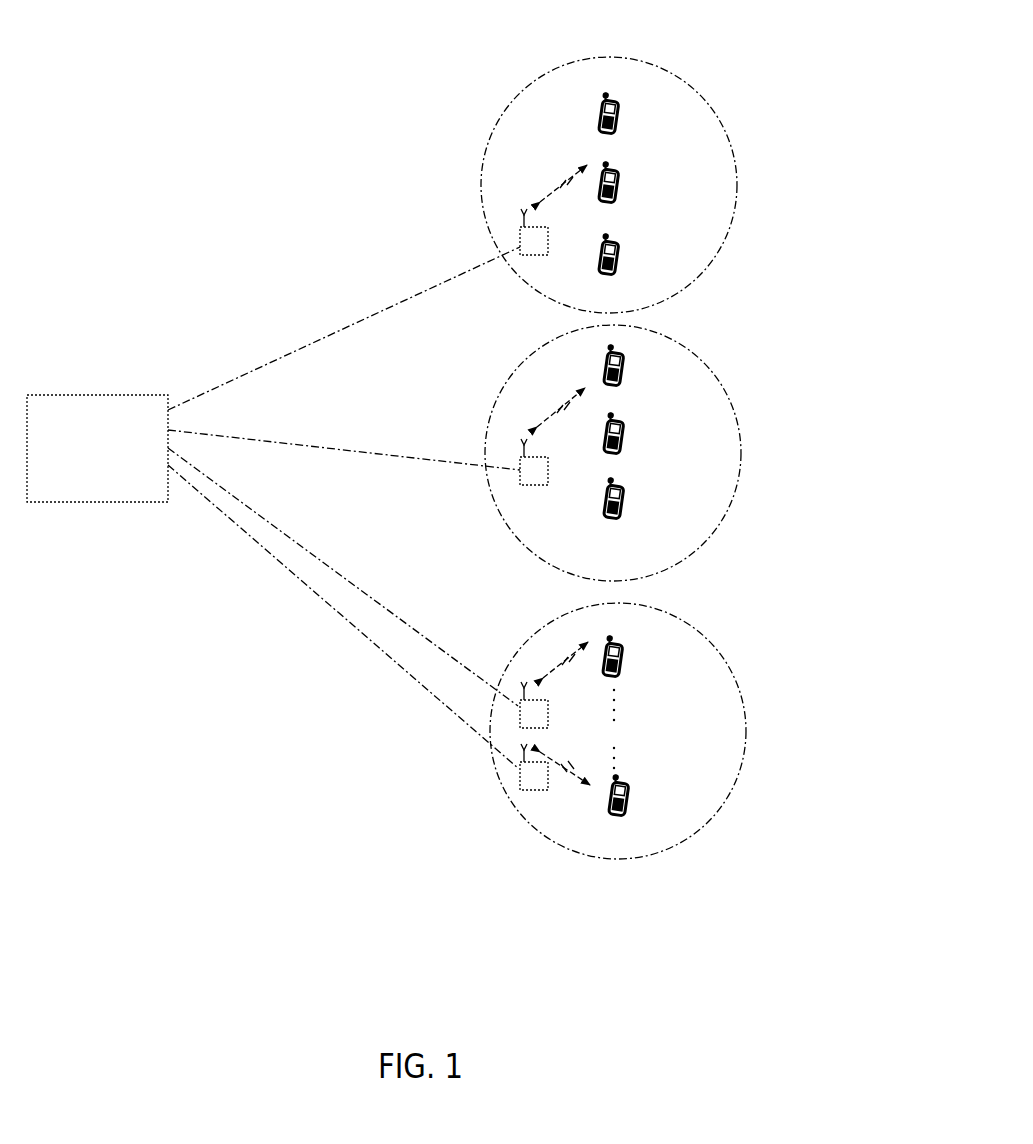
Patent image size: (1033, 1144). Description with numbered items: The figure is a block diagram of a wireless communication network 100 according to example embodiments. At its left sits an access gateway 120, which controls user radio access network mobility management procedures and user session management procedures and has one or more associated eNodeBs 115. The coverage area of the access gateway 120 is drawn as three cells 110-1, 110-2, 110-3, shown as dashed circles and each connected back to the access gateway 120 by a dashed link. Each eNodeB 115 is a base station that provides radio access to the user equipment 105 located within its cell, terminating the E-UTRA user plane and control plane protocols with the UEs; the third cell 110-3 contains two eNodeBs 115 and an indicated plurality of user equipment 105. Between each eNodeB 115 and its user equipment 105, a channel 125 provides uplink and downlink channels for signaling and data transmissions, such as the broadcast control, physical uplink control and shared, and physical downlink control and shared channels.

The wireless communication network 100 is at (92, 95).
The user equipment 105 is at (617, 106).
The cell 110-1 is at (617, 58).
The cell 110-2 is at (710, 366).
The cell 110-3 is at (720, 650).
The eNodeB 115 is at (520, 240).
The access gateway 120 is at (93, 395).
The channel 125 is at (558, 183).